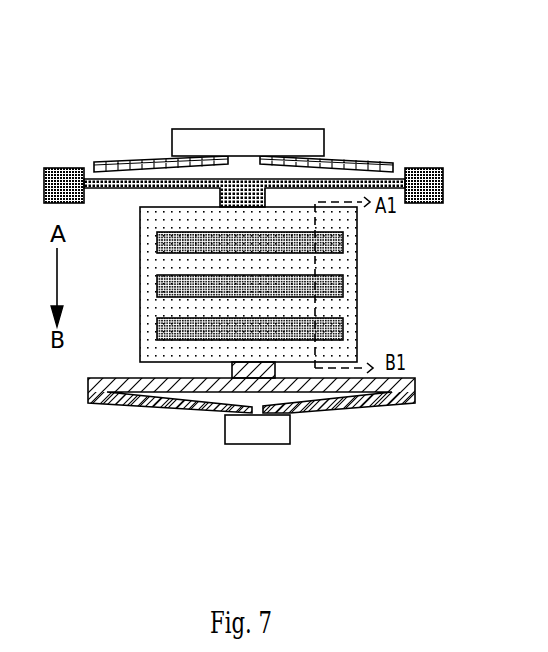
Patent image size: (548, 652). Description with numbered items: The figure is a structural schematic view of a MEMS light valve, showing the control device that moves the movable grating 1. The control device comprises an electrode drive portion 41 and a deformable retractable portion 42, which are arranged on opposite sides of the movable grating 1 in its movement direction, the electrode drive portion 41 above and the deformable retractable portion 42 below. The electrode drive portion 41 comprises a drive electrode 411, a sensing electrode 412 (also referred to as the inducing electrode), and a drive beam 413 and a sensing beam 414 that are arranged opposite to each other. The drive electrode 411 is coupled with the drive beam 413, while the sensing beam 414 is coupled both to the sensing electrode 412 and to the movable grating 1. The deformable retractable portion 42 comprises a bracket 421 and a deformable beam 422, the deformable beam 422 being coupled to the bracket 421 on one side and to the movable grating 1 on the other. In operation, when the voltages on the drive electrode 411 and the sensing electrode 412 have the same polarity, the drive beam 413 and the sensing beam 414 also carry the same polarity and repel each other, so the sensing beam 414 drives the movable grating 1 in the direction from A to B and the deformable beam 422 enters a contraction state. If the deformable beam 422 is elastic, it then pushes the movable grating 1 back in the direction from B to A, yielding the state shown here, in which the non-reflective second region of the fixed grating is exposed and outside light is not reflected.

The electrode drive portion 41 is at (245, 115).
The drive electrode 411 is at (251, 144).
The sensing electrode 412 is at (65, 170).
The drive beam 413 is at (351, 164).
The sensing beam 414 is at (133, 184).
The movable grating 1 is at (345, 267).
The deformable retractable portion 42 is at (259, 469).
The bracket 421 is at (265, 428).
The deformable beam 422 is at (355, 402).